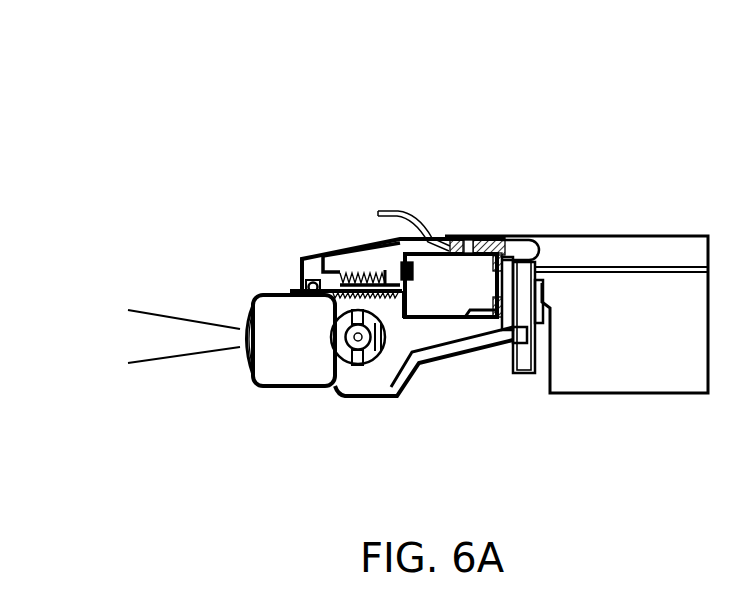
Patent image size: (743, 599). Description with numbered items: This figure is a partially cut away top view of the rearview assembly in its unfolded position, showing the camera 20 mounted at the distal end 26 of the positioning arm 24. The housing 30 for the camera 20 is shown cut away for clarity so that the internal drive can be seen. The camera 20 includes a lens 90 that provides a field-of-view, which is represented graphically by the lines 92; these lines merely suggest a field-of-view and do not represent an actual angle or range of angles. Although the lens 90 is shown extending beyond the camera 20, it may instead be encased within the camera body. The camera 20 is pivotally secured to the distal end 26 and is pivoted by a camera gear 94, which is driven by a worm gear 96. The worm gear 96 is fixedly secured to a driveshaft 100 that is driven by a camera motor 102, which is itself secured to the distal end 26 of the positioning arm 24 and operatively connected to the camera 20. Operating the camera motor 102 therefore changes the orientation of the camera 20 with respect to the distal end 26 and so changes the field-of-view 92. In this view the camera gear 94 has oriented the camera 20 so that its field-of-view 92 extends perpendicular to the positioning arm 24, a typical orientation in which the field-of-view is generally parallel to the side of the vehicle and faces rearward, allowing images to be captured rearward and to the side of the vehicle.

The field-of-view lines 92 is at (153, 308).
The lens 90 is at (246, 328).
The camera 20 is at (286, 294).
The driveshaft 100 is at (303, 283).
The worm gear 96 is at (383, 277).
The housing 30 is at (398, 207).
The camera gear 94 is at (452, 368).
The camera motor 102 is at (463, 345).
The distal end 26 is at (546, 384).
The positioning arm 24 is at (592, 233).